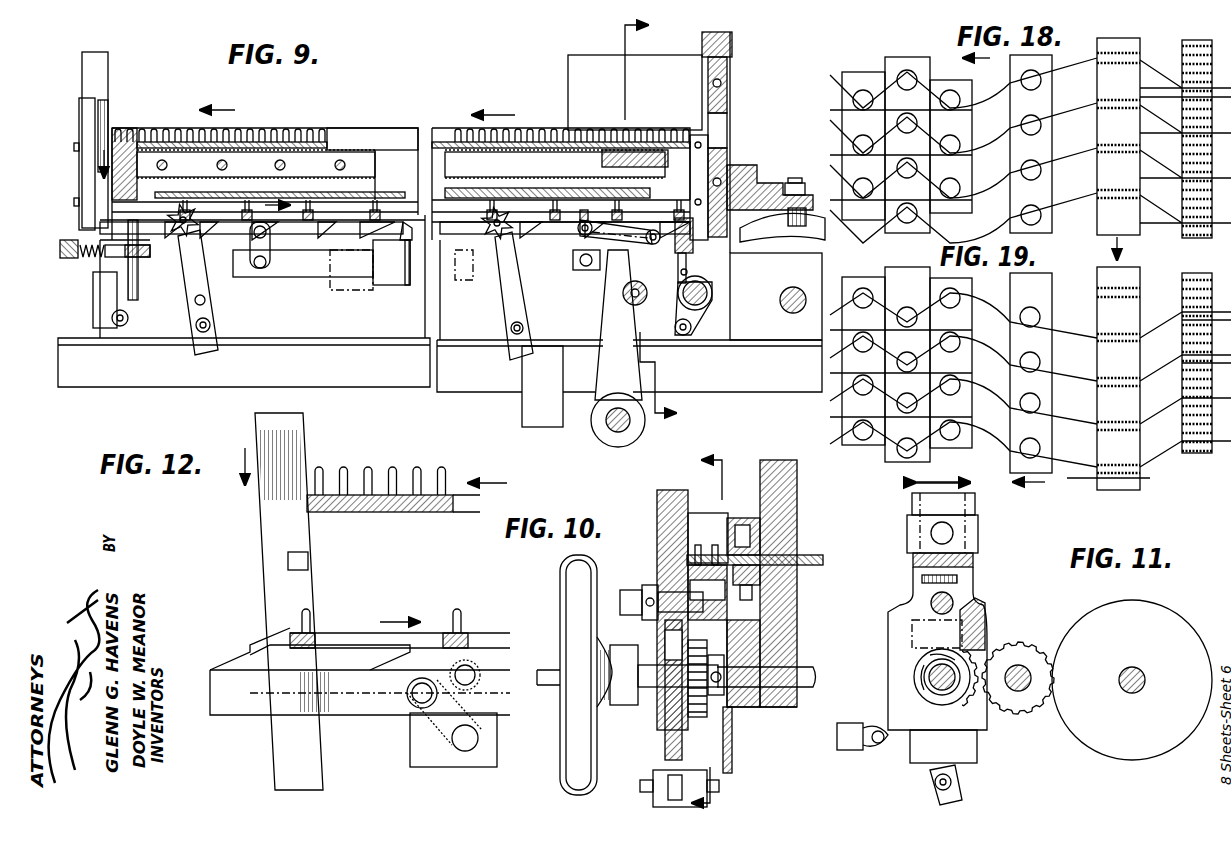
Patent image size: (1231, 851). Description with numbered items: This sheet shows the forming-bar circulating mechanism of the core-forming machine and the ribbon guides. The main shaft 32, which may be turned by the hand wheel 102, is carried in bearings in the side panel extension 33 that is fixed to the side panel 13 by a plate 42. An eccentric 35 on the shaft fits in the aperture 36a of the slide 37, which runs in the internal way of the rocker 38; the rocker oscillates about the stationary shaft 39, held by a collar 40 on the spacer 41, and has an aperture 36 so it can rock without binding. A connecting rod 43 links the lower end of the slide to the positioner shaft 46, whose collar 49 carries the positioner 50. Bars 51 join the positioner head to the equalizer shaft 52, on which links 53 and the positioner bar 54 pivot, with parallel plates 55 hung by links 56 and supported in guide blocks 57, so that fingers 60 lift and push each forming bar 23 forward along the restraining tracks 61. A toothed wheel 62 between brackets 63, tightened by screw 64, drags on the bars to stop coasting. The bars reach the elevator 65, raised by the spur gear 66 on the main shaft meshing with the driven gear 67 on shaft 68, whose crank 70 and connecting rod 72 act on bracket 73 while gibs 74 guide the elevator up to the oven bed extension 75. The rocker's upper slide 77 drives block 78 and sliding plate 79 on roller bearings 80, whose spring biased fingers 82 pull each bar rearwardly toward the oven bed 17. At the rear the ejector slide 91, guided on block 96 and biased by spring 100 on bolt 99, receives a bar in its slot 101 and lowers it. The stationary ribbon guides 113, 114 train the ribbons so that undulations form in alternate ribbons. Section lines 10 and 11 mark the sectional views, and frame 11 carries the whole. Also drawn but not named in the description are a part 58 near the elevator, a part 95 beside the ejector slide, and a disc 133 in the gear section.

In FIG. 9, the section line 10— 10 is at (662, 216).
In FIG. 9, the frame 11 is at (725, 422).
In FIG. 10, the frame 11 is at (716, 623).
In FIG. 9, the side panel 13 is at (402, 132).
In FIG. 9, the oven bed 17 is at (360, 152).
In FIG. 9, the forming bars 23 is at (740, 250).
In FIG. 12, the forming bars 23 is at (402, 512).
In FIG. 18, the forming bars 23 is at (885, 60).
In FIG. 19, the forming bars 23 is at (1040, 295).
In FIG. 9, the main shaft 32 is at (640, 300).
In FIG. 10, the main shaft 32 is at (782, 670).
In FIG. 11, the main shaft 32 is at (935, 688).
In FIG. 9, the side panel extension 33 is at (580, 62).
In FIG. 10, the side panel extension 33 is at (790, 623).
In FIG. 10, the eccentric 35 is at (673, 670).
In FIG. 11, the eccentric 35 is at (930, 662).
In FIG. 10, the aperture 36 is at (660, 660).
In FIG. 11, the aperture 36 is at (935, 705).
In FIG. 10, the aperture 36a is at (672, 640).
In FIG. 11, the aperture 36a is at (920, 680).
In FIG. 10, the slide 37 is at (670, 725).
In FIG. 11, the slide 37 is at (960, 745).
In FIG. 10, the rocker 38 is at (660, 502).
In FIG. 11, the rocker 38 is at (985, 605).
In FIG. 10, the shaft 39 is at (628, 590).
In FIG. 11, the shaft 39 is at (953, 598).
In FIG. 10, the collar 40 is at (650, 585).
In FIG. 10, the spacer 41 is at (705, 522).
In FIG. 10, the plate 42 is at (795, 605).
In FIG. 10, the connecting rod 43 is at (653, 800).
In FIG. 11, the connecting rod 43 is at (960, 790).
In FIG. 9, the positioner shaft 46 is at (618, 432).
In FIG. 9, the collar 49 is at (598, 430).
In FIG. 9, the positioner 50 is at (618, 325).
In FIG. 9, the bars 51 is at (595, 270).
In FIG. 9, the equalizer shaft 52 is at (584, 225).
In FIG. 9, the links 53 is at (580, 232).
In FIG. 9, the positioner bar 54 is at (392, 275).
In FIG. 12, the positioner bar 54 is at (355, 715).
In FIG. 9, the parallel plates 55 is at (312, 270).
In FIG. 12, the parallel plates 55 is at (440, 752).
In FIG. 9, the links 56 is at (268, 264).
In FIG. 12, the links 56 is at (410, 705).
In FIG. 9, the guide blocks 57 is at (355, 290).
In FIG. 9, the guide 58 is at (690, 245).
In FIG. 9, the fingers 60 is at (345, 232).
In FIG. 12, the fingers 60 is at (232, 665).
In FIG. 9, the restraining tracks 61 is at (130, 228).
In FIG. 9, the toothed wheel 62 is at (197, 235).
In FIG. 9, the brackets 63 is at (205, 268).
In FIG. 9, the screw 64 is at (210, 323).
In FIG. 9, the elevator 65 is at (635, 285).
In FIG. 10, the spur gear 66 is at (700, 717).
In FIG. 11, the spur gear 66 is at (975, 652).
In FIG. 11, the driven gear 67 is at (1025, 648).
In FIG. 9, the shaft 68 is at (706, 297).
In FIG. 11, the shaft 68 is at (1022, 690).
In FIG. 9, the crank 70 is at (690, 318).
In FIG. 9, the connecting rod 72 is at (680, 276).
In FIG. 9, the bracket 73 is at (690, 262).
In FIG. 9, the gibs 74 is at (760, 170).
In FIG. 9, the oven bed extension 75 is at (615, 138).
In FIG. 10, the upper slide 77 is at (660, 520).
In FIG. 11, the upper slide 77 is at (950, 503).
In FIG. 10, the block 78 is at (735, 518).
In FIG. 11, the block 78 is at (978, 527).
In FIG. 9, the sliding plate 79 is at (655, 135).
In FIG. 10, the sliding plate 79 is at (810, 555).
In FIG. 11, the sliding plate 79 is at (973, 560).
In FIG. 10, the roller bearings 80 is at (795, 585).
In FIG. 9, the spring biased fingers 82 is at (712, 165).
In FIG. 9, the ejector slide 91 is at (108, 78).
In FIG. 12, the ejector slide 91 is at (270, 540).
In FIG. 9, the guide strip 95 is at (80, 185).
In FIG. 9, the block 96 is at (95, 312).
In FIG. 9, the bolt 99 is at (60, 256).
In FIG. 9, the spring 100 is at (85, 258).
In FIG. 12, the slot 101 is at (308, 561).
In FIG. 10, the hand wheel 102 is at (566, 592).
In FIG. 18, the ribbon guide 113 is at (1190, 42).
In FIG. 19, the ribbon guide 113 is at (1190, 275).
In FIG. 18, the ribbon guide 114 is at (1130, 42).
In FIG. 19, the ribbon guide 114 is at (1130, 272).
In FIG. 11, the disc 133 is at (1150, 618).